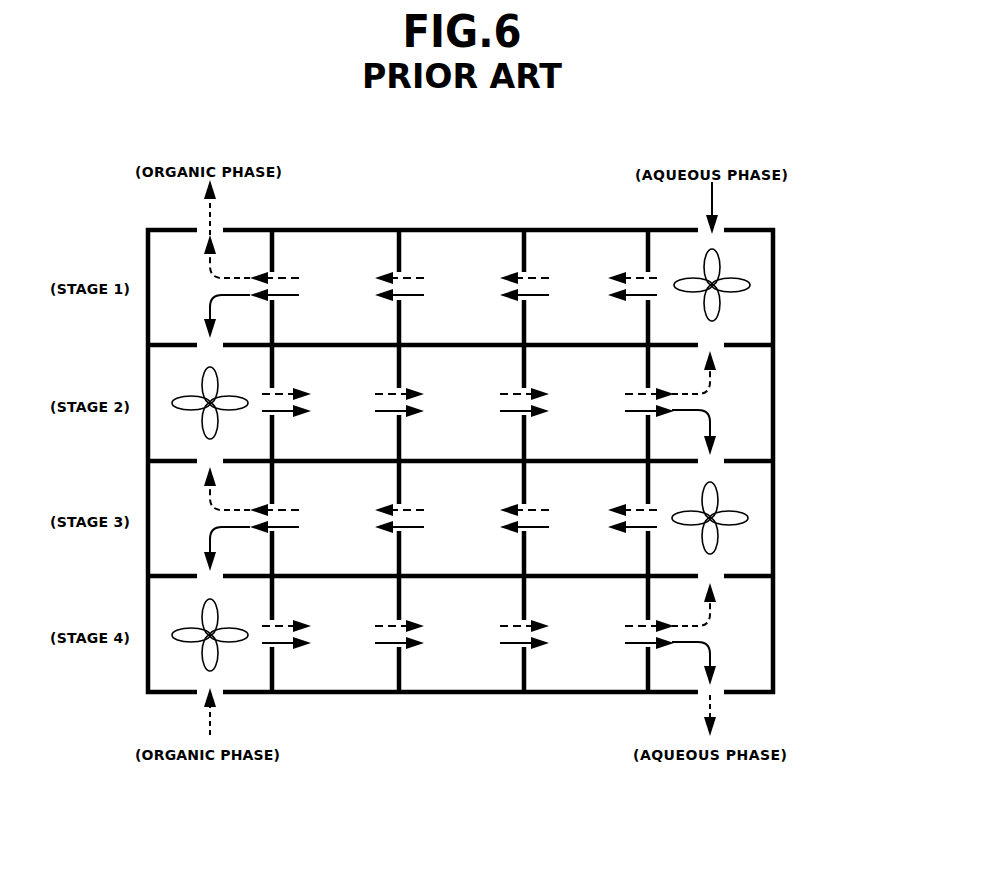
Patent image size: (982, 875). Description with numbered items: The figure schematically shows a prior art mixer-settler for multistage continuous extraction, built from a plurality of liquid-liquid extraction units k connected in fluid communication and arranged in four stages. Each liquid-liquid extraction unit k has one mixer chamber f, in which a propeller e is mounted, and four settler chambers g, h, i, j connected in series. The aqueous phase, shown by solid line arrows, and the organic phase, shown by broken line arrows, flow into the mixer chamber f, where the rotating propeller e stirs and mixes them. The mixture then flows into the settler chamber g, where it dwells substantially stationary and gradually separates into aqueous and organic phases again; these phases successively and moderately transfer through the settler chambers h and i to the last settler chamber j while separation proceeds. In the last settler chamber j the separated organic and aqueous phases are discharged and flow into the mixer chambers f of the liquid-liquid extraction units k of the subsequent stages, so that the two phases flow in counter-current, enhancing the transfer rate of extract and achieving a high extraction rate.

The propeller e is at (738, 287).
The mixer chamber f is at (747, 250).
The settler chamber g is at (567, 253).
The settler chamber h is at (467, 253).
The settler chamber i is at (340, 253).
The settler chamber j is at (247, 244).
The liquid-liquid extraction unit k is at (507, 461).